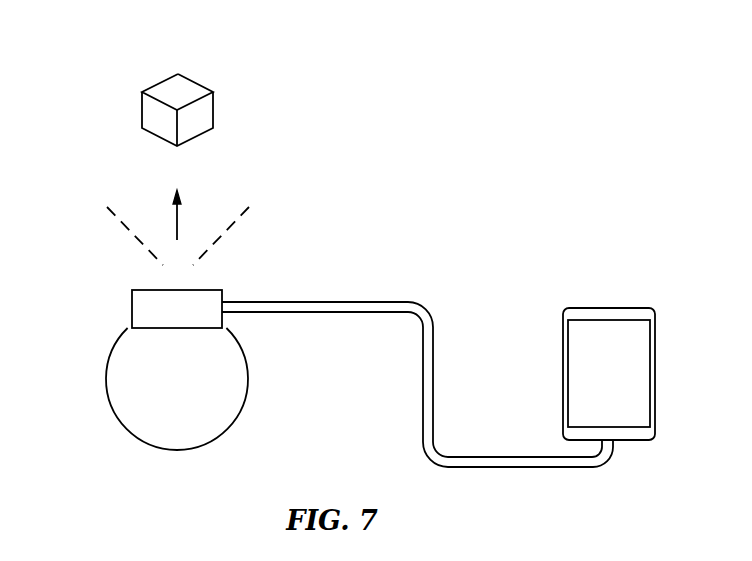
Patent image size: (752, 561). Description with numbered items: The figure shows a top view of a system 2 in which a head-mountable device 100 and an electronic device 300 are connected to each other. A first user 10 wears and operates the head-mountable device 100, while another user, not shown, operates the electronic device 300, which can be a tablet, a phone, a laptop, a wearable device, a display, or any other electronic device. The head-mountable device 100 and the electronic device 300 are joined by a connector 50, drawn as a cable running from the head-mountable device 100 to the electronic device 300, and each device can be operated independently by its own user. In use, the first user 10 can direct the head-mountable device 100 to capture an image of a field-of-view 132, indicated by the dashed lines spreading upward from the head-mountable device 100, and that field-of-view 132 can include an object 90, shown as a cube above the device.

The system 2 is at (381, 104).
The first user 10 is at (106, 373).
The connector 50 is at (356, 302).
The object 90 is at (142, 92).
The head-mountable device 100 is at (132, 308).
The field-of-view 132 is at (120, 224).
The electronic device 300 is at (593, 308).